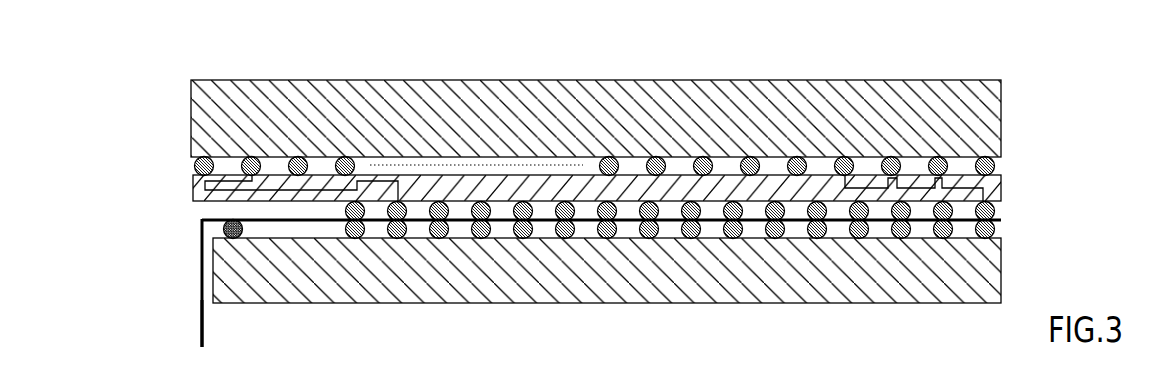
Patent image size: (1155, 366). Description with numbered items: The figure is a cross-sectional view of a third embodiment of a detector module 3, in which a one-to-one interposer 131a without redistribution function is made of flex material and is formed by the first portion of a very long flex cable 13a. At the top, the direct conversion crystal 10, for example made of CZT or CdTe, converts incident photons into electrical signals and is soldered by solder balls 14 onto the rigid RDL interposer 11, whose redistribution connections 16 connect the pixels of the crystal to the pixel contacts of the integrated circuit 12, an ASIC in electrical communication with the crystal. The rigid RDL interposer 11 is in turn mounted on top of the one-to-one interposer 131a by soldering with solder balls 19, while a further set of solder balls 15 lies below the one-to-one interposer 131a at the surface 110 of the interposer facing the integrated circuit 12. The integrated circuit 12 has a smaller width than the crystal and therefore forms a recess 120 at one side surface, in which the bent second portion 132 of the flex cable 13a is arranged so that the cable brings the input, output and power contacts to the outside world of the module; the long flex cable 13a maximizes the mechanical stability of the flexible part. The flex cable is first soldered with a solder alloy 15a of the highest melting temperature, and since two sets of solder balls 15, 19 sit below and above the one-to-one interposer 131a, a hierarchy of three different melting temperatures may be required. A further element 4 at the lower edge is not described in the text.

The detector module 3 is at (184, 77).
The direct conversion crystal 10 is at (1002, 111).
The solder balls 14 is at (995, 166).
The rigid RDL interposer 11 is at (1002, 185).
The redistribution connections 16 is at (855, 175).
The solder balls 19 is at (995, 211).
The solder balls 15 is at (995, 229).
The solder alloy 15a is at (222, 230).
The integrated circuit 12 is at (1003, 267).
The flex cable 13a is at (559, 281).
The 1-to-1 interposer 131a is at (203, 219).
The second portion 132 is at (200, 316).
The recess 120 is at (207, 305).
The surface of the interposer 110 is at (629, 232).
The adjacent element 4 is at (133, 360).